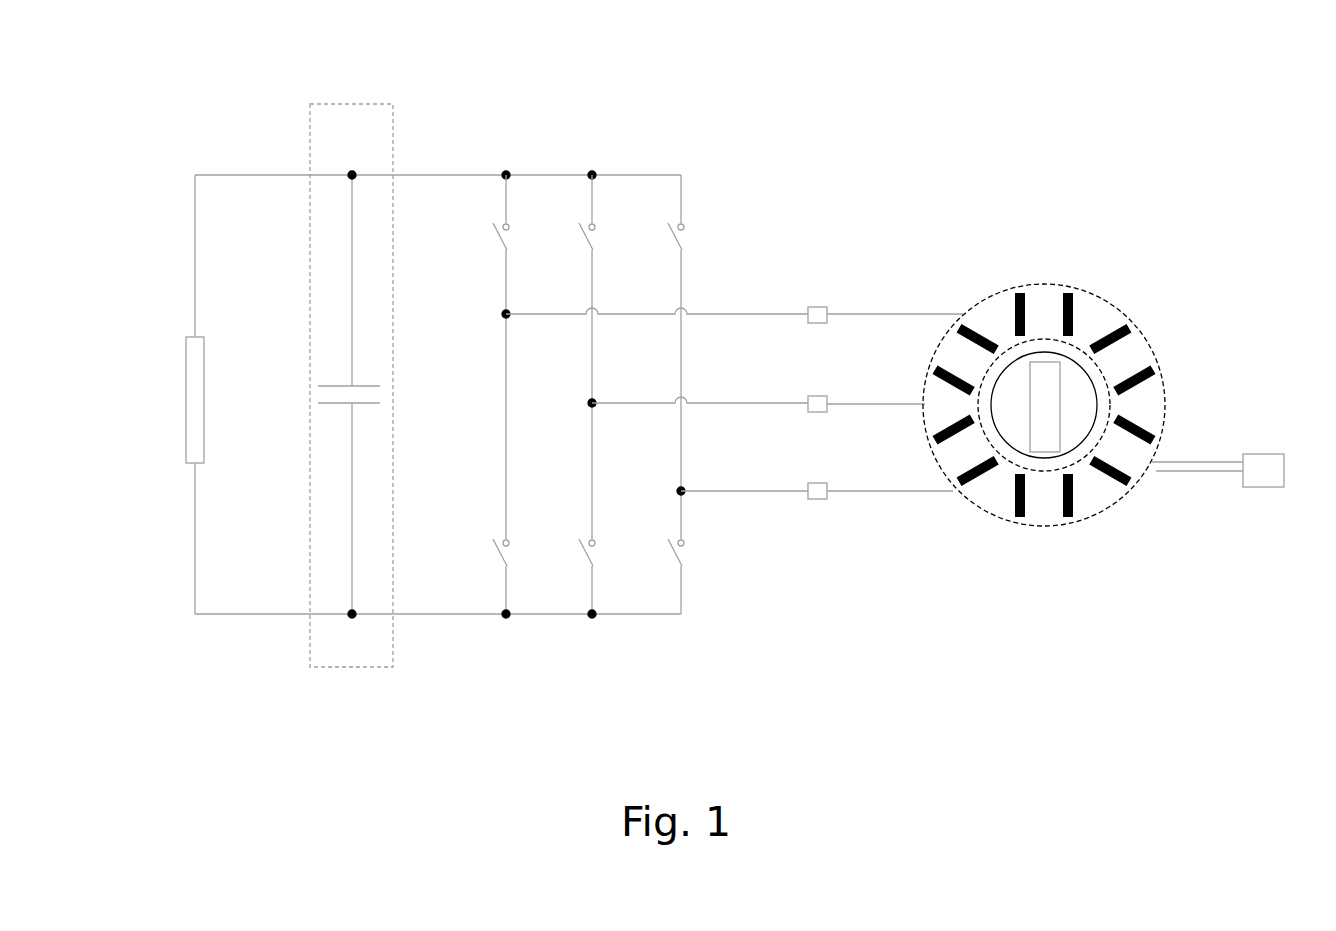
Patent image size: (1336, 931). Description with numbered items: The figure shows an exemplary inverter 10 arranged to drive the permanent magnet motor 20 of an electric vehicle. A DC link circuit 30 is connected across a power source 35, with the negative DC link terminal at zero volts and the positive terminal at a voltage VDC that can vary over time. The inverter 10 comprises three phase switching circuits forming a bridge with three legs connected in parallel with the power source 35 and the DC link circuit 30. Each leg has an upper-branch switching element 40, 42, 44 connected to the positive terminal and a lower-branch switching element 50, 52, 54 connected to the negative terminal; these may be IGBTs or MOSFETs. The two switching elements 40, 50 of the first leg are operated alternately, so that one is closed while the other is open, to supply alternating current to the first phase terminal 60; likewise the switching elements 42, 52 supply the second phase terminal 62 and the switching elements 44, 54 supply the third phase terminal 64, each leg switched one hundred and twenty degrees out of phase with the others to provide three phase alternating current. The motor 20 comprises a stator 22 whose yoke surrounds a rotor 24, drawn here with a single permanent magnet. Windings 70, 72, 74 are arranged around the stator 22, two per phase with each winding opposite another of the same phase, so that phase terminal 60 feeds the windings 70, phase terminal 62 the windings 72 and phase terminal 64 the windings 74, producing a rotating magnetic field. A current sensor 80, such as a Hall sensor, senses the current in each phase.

The inverter 10 is at (668, 98).
The motor 20 is at (1064, 357).
The stator 22 is at (1148, 350).
The rotor 24 is at (1044, 405).
The DC link circuit 30 is at (352, 103).
The power source 35 is at (204, 386).
The first switching element of first leg 40 is at (498, 233).
The first switching element of second leg 42 is at (584, 233).
The first switching element of third leg 44 is at (672, 233).
The second switching element of first leg 50 is at (498, 553).
The second switching element of second leg 52 is at (584, 553).
The second switching element of third leg 54 is at (673, 553).
The first phase terminal 60 is at (818, 308).
The second phase terminal 62 is at (815, 396).
The third phase terminal 64 is at (818, 500).
The windings 70 is at (1044, 405).
The windings 72 is at (1044, 405).
The windings 74 is at (1044, 405).
The current sensor 80 is at (1273, 455).